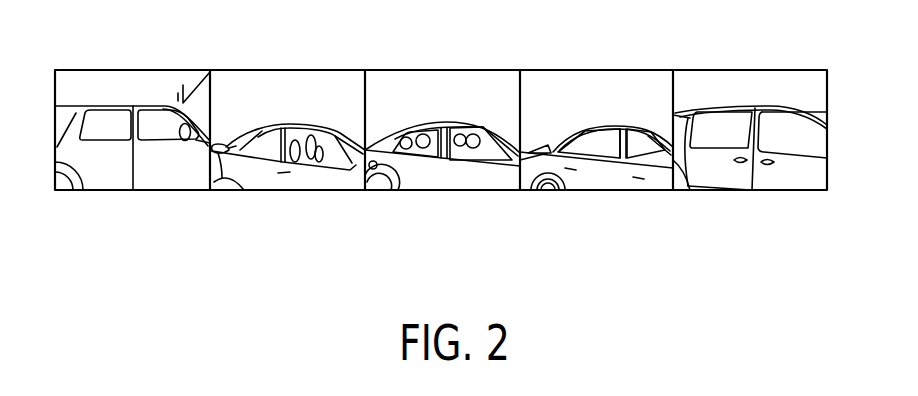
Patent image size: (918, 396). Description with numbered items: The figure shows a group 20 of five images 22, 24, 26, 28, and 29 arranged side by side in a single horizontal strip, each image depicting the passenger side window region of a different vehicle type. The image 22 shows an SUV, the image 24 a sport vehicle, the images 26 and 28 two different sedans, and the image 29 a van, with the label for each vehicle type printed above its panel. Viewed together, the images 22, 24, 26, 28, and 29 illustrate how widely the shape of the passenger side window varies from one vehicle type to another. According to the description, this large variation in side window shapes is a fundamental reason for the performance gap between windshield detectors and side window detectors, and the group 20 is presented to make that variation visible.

The group of images 20 is at (441, 152).
The image 22 is at (132, 103).
The image 24 is at (289, 103).
The image 26 is at (443, 103).
The image 28 is at (602, 103).
The image 29 is at (750, 103).